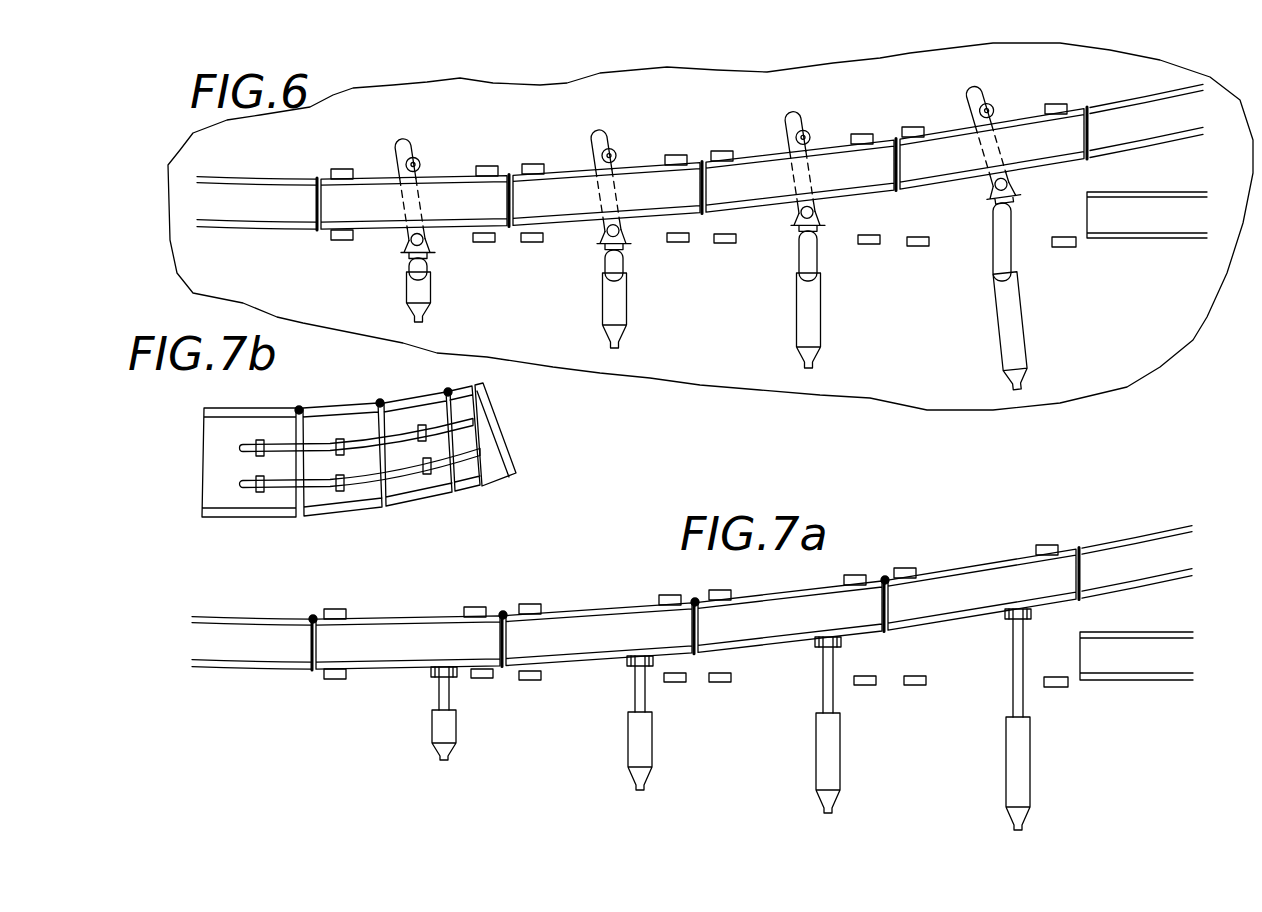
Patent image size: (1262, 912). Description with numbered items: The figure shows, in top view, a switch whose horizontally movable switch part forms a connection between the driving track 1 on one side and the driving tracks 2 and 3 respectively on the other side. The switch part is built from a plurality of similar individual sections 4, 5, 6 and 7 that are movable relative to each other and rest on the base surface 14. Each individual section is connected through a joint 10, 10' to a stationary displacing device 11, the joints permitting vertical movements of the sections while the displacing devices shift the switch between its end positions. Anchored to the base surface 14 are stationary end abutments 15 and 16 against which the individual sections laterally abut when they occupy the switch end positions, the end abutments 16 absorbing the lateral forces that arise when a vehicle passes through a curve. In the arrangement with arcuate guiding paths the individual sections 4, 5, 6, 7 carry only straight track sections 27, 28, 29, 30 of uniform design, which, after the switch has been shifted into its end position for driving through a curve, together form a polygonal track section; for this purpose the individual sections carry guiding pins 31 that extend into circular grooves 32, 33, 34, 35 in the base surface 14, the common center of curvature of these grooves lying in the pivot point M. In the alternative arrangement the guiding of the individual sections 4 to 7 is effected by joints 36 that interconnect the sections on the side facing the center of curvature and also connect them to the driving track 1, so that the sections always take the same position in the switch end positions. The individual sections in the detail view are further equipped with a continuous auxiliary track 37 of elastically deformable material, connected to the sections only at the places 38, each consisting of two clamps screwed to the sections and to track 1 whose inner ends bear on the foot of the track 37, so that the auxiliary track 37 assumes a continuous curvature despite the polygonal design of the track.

In FIG. 6, the driving track 1 is at (232, 212).
In FIG. 7b, the driving track 1 is at (230, 500).
In FIG. 7a, the driving track 1 is at (255, 653).
In FIG. 6, the driving track 2 is at (1158, 126).
In FIG. 7a, the driving track 2 is at (1130, 547).
In FIG. 6, the driving track 3 is at (1158, 222).
In FIG. 7a, the driving track 3 is at (1145, 667).
In FIG. 6, the individual section 4 is at (414, 196).
In FIG. 7b, the individual section 4 is at (338, 497).
In FIG. 7a, the individual section 4 is at (413, 653).
In FIG. 6, the individual section 5 is at (606, 194).
In FIG. 7b, the individual section 5 is at (435, 480).
In FIG. 7a, the individual section 5 is at (588, 643).
In FIG. 6, the individual section 6 is at (800, 179).
In FIG. 7b, the individual section 6 is at (492, 463).
In FIG. 7a, the individual section 6 is at (778, 623).
In FIG. 6, the individual section 7 is at (978, 174).
In FIG. 7a, the individual section 7 is at (972, 597).
In FIG. 6, the joint 10 is at (710, 255).
In FIG. 6, the joint 10' is at (747, 330).
In FIG. 6, the stationary displacing device 11 is at (421, 287).
In FIG. 6, the base surface 14 is at (1177, 333).
In FIG. 6, the stationary end abutment 15 is at (345, 168).
In FIG. 7a, the stationary end abutment 15 is at (340, 608).
In FIG. 6, the stationary end abutment 16 is at (340, 242).
In FIG. 7a, the stationary end abutment 16 is at (333, 679).
In FIG. 6, the straight track section 27 is at (373, 190).
In FIG. 6, the straight track section 28 is at (558, 187).
In FIG. 6, the straight track section 29 is at (752, 170).
In FIG. 6, the straight track section 30 is at (957, 173).
In FIG. 6, the guiding pin 31 is at (716, 162).
In FIG. 6, the circular groove 32 is at (404, 138).
In FIG. 6, the circular groove 33 is at (608, 130).
In FIG. 6, the circular groove 34 is at (795, 112).
In FIG. 6, the circular groove 35 is at (957, 97).
In FIG. 7b, the joint 36 is at (313, 400).
In FIG. 7a, the joint 36 is at (312, 617).
In FIG. 7b, the continuous auxiliary track 37 is at (283, 447).
In FIG. 7b, the place 38 is at (341, 437).
In FIG. 6, the pivot point M is at (316, 203).